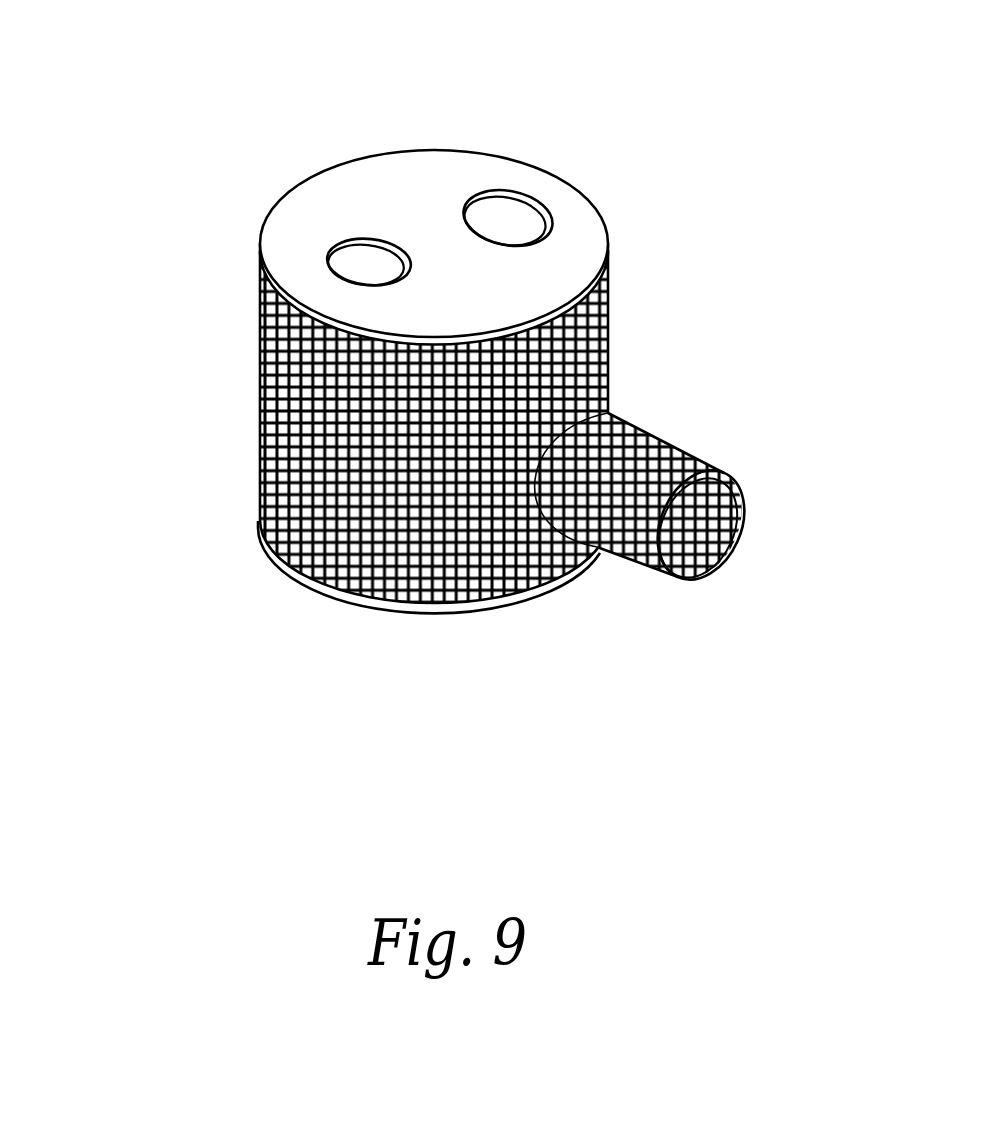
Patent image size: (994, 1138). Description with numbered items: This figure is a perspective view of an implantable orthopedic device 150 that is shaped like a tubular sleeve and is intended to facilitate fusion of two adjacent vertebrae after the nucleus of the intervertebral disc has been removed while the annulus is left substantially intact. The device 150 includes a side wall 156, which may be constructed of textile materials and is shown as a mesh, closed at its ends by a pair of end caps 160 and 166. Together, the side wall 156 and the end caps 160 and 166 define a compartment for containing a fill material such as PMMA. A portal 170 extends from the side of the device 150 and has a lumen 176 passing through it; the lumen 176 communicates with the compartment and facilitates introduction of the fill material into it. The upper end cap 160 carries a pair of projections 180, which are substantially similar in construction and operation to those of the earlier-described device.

The implantable orthopedic device 150 is at (196, 78).
The side wall 156 is at (259, 362).
The end cap 160 is at (527, 183).
The end cap 166 is at (517, 606).
The portal 170 is at (672, 440).
The lumen 176 is at (730, 540).
The projections 180 is at (497, 188).